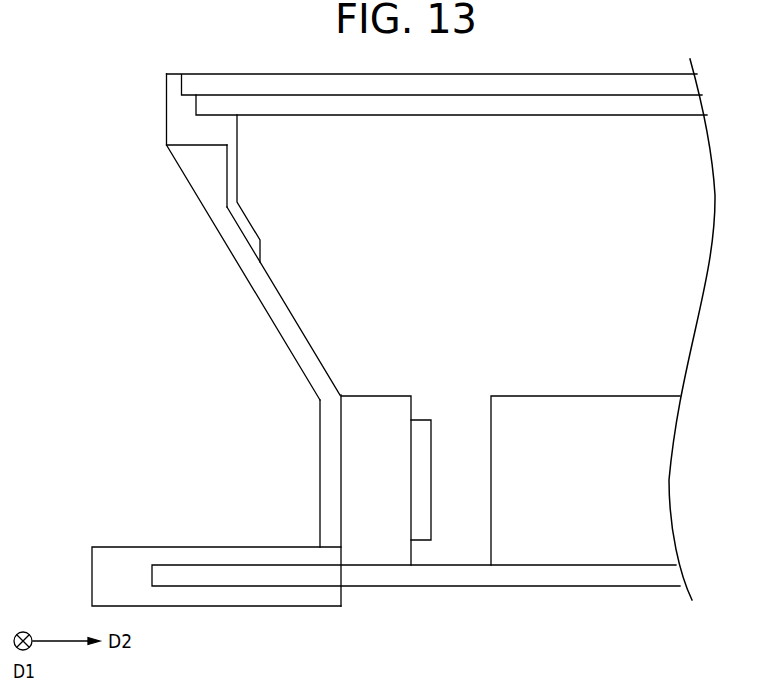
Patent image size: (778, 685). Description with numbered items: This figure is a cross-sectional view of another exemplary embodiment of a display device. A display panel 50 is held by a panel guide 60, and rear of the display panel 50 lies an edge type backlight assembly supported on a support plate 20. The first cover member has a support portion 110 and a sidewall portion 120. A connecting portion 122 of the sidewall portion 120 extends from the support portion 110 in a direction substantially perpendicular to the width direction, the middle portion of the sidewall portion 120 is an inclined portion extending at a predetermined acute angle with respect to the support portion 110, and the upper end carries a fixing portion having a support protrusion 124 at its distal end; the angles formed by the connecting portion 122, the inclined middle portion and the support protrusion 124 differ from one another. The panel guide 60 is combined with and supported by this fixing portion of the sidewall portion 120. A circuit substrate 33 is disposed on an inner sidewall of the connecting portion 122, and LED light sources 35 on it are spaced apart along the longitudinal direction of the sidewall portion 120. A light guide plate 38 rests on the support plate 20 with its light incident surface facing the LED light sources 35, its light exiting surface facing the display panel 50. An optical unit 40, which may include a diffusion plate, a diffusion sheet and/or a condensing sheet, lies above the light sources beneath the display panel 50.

The support plate 20 is at (678, 578).
The circuit substrate 33 is at (373, 406).
The LED light source 35 is at (421, 427).
The light guide plate 38 is at (597, 405).
The optical unit 40 is at (680, 104).
The display panel 50 is at (680, 83).
The panel guide 60 is at (180, 113).
The support portion 110 is at (90, 574).
The sidewall portion 120 is at (247, 284).
The connecting portion 122 is at (328, 472).
The support protrusion 124 is at (205, 179).